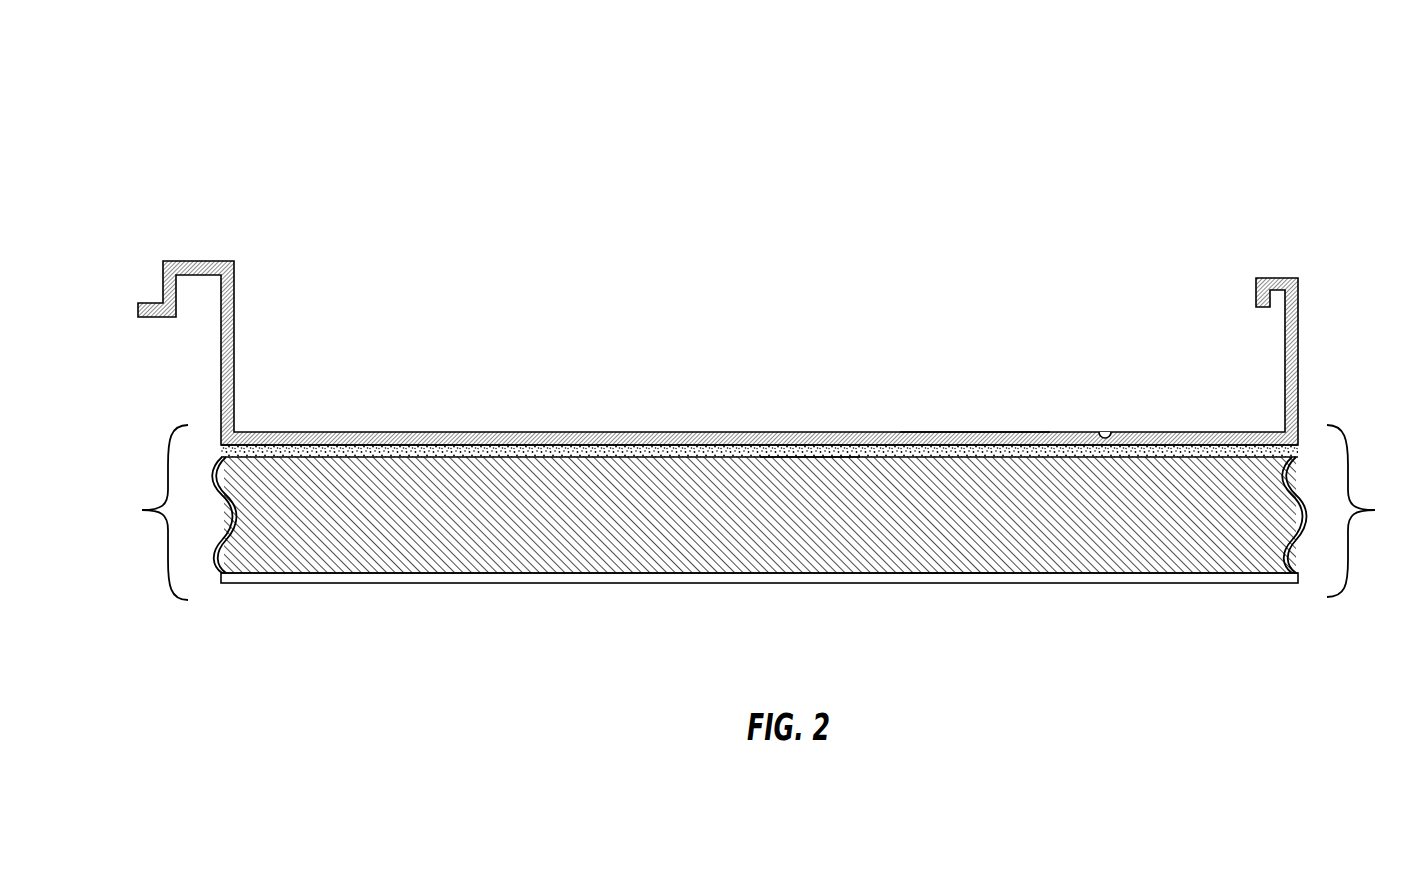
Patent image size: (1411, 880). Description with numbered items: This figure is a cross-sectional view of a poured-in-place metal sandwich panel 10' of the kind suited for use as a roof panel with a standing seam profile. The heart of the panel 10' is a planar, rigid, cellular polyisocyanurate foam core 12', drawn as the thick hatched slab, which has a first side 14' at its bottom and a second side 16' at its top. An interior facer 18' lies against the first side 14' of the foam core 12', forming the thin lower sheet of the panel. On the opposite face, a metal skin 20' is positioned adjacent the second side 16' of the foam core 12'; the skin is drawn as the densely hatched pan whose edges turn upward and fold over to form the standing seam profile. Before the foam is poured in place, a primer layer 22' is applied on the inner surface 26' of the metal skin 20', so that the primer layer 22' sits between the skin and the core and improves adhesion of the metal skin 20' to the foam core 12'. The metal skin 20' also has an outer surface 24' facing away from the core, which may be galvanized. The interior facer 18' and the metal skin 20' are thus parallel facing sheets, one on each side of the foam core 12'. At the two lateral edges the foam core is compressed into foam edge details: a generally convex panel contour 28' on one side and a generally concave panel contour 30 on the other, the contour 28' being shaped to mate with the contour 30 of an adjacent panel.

The poured-in-place sandwich panel 10' is at (314, 75).
The foam core 12' is at (759, 515).
The first side 14' is at (965, 604).
The second side 16' is at (829, 422).
The interior facer 18' is at (759, 605).
The metal skin 20' is at (718, 353).
The primer layer 22' is at (796, 422).
The outer surface 24' is at (975, 410).
The inner surface 26' is at (1141, 413).
The generally convex panel contour 28' is at (139, 512).
The generally concave panel contour 30 is at (1367, 511).